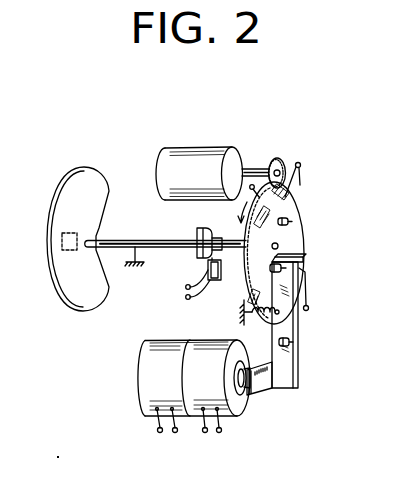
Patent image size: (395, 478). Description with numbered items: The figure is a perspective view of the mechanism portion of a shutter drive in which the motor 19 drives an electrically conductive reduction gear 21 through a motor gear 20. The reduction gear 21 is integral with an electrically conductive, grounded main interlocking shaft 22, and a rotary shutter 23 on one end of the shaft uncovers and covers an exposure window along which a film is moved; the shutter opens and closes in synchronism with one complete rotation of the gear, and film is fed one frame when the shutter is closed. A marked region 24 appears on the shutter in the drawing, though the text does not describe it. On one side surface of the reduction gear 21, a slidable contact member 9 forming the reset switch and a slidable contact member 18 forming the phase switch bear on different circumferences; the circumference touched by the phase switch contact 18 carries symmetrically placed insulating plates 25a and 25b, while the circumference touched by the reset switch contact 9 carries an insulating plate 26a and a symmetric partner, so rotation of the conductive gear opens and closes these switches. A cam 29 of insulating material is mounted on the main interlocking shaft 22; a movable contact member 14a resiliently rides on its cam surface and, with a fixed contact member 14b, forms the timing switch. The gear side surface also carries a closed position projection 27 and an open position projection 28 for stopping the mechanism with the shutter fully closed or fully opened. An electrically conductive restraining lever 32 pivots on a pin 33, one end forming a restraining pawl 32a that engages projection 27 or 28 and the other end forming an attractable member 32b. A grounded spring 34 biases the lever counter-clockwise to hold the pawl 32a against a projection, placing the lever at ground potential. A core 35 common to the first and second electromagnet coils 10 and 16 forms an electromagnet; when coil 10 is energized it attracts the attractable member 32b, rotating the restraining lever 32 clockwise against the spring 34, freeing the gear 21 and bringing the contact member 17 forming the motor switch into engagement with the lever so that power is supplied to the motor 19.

The slidable contact member 9 is at (257, 168).
The first electromagnet coil 10 is at (200, 376).
The movable contact member 14a is at (208, 268).
The fixed contact member 14b is at (221, 270).
The second electromagnet coil 16 is at (148, 359).
The contact member 17 is at (309, 308).
The slidable contact member 18 is at (301, 166).
The motor 19 is at (207, 147).
The motor gear 20 is at (274, 158).
The electrically conductive reduction gear 21 is at (292, 250).
The main interlocking shaft 22 is at (152, 238).
The rotary shutter 23 is at (97, 286).
The marker 24 is at (64, 230).
The insulating plate 25a is at (292, 202).
The insulating plate 25b is at (250, 304).
The insulating plate 26a is at (245, 210).
The closed position projection 27 is at (271, 265).
The open position projection 28 is at (293, 222).
The cam 29 is at (199, 243).
The restraining lever 32 is at (294, 322).
The restraining pawl 32a is at (302, 264).
The attractable member 32b is at (258, 380).
The pin 33 is at (294, 344).
The spring 34 is at (258, 314).
The core 35 is at (243, 400).